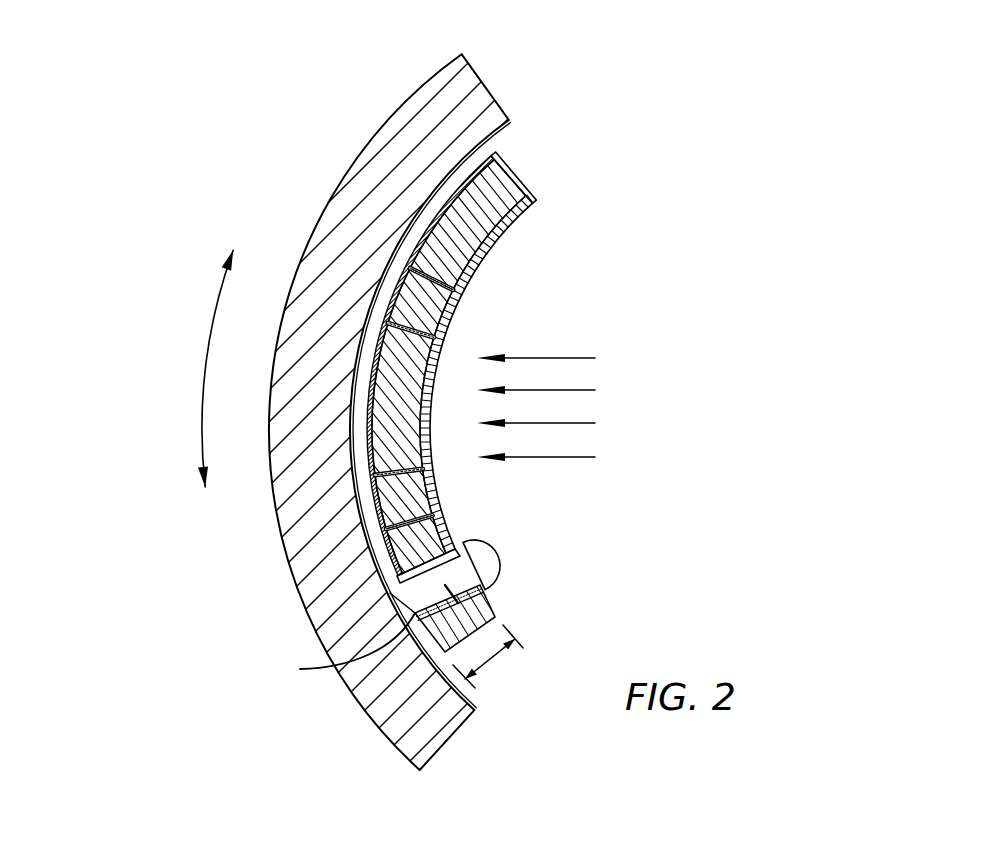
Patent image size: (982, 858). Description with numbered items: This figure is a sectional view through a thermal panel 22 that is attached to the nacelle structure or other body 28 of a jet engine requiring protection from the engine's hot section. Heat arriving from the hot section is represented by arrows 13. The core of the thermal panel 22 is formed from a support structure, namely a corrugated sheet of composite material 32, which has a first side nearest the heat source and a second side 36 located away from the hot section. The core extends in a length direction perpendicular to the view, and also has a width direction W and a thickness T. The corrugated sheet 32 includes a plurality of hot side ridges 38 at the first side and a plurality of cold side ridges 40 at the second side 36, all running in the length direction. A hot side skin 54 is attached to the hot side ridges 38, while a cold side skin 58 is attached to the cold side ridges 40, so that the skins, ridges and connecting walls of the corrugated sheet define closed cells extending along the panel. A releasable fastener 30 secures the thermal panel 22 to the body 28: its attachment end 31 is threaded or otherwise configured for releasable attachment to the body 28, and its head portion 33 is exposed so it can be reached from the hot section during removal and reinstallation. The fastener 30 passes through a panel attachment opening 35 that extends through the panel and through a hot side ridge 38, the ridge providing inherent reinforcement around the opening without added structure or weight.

The arrows 13 is at (548, 457).
The thermal panel 22 is at (516, 236).
The body 28 is at (447, 733).
The releasable fastener 30 is at (497, 604).
The attachment end 31 is at (300, 669).
The corrugated sheet of composite material 32 is at (497, 208).
The head portion 33 is at (498, 553).
The panel attachment opening 35 is at (390, 593).
The second side 36 is at (400, 568).
The hot side ridges 38 is at (478, 262).
The cold side ridges 40 is at (405, 298).
The hot side skin 54 is at (532, 200).
The cold side skin 58 is at (490, 158).
The width direction W is at (205, 375).
The thickness T is at (490, 659).